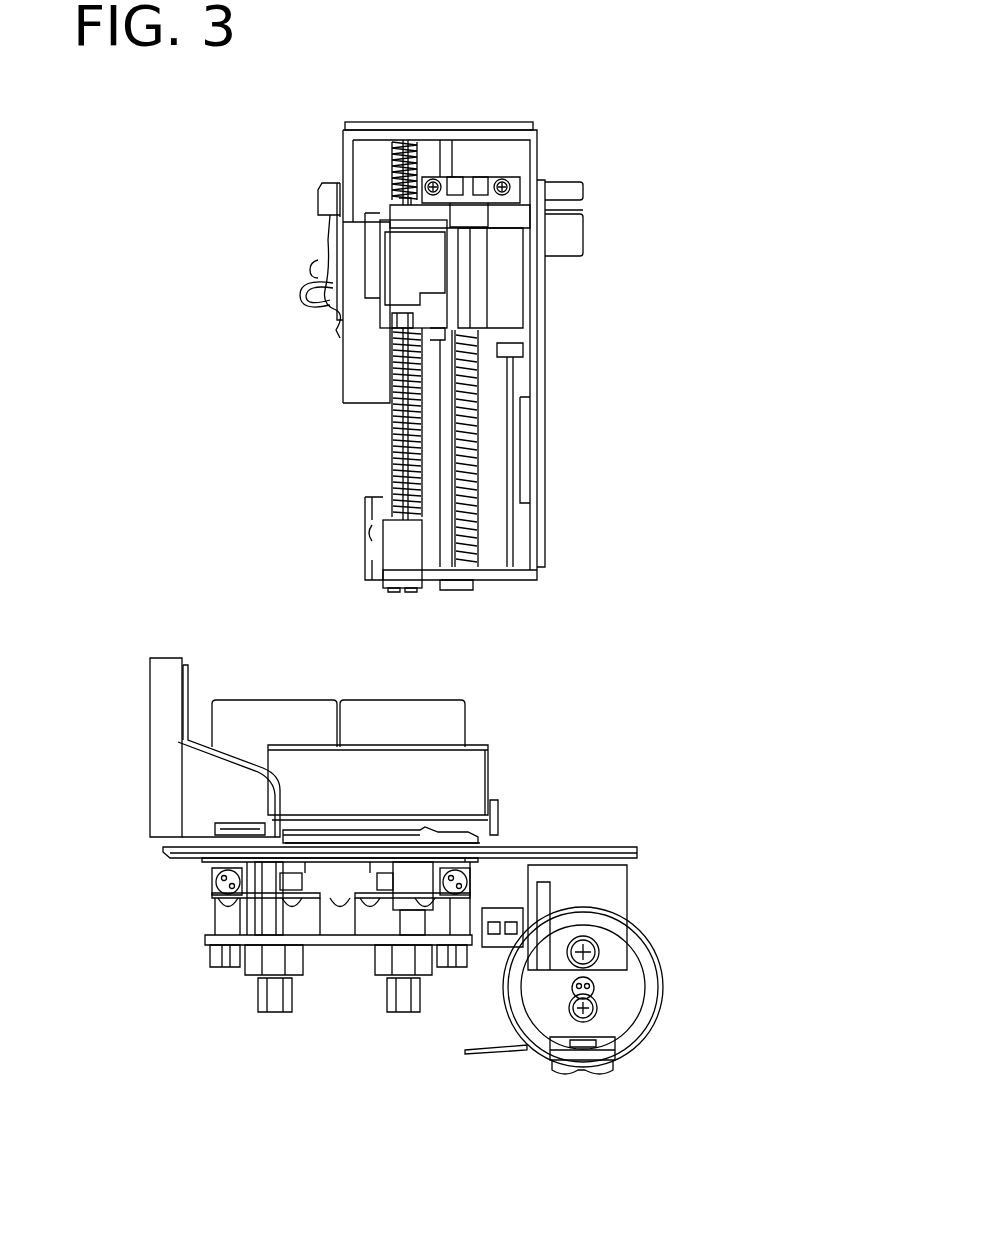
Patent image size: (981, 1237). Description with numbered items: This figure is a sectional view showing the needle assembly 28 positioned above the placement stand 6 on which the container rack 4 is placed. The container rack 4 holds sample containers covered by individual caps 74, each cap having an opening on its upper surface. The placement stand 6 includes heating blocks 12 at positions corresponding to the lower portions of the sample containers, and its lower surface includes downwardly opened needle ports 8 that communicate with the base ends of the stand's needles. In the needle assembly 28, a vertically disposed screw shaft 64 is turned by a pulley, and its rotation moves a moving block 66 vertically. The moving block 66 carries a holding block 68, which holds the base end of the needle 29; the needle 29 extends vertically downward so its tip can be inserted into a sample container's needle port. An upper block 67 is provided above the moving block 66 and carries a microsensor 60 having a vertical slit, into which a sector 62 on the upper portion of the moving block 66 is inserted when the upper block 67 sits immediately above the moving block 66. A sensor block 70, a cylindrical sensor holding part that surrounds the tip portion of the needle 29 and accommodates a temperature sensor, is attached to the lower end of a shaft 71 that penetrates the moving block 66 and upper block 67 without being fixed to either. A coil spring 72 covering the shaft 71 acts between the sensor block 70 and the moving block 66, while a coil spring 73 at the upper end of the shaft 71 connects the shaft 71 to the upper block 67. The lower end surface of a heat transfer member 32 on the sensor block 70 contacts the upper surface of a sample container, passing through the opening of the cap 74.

The needle assembly 28 is at (555, 143).
The shaft 71 is at (397, 162).
The coil spring 73 is at (395, 180).
The sector 62 is at (463, 188).
The microsensor 60 is at (480, 187).
The upper block 67 is at (507, 210).
The holding block 68 is at (405, 243).
The moving block 66 is at (503, 297).
The screw shaft 64 is at (477, 415).
The needle 29 is at (403, 448).
The coil spring 72 is at (393, 475).
The sensor block 70 is at (392, 577).
The heat transfer member 32 is at (410, 592).
The cap 74 is at (457, 720).
The container rack 4 is at (477, 770).
The heating block 12 is at (473, 840).
The placement stand 6 is at (627, 843).
The needle port 8 is at (275, 1012).